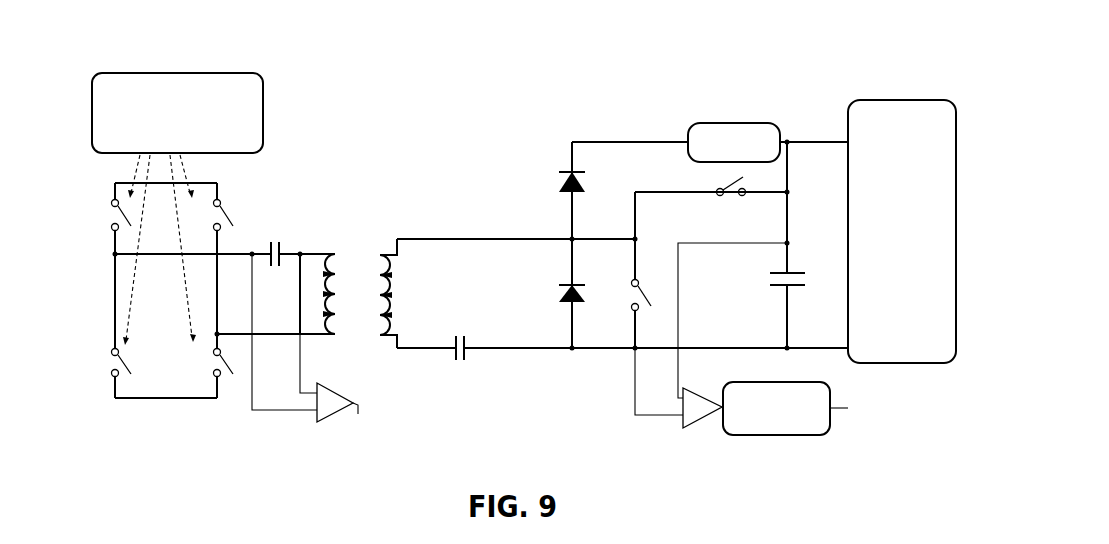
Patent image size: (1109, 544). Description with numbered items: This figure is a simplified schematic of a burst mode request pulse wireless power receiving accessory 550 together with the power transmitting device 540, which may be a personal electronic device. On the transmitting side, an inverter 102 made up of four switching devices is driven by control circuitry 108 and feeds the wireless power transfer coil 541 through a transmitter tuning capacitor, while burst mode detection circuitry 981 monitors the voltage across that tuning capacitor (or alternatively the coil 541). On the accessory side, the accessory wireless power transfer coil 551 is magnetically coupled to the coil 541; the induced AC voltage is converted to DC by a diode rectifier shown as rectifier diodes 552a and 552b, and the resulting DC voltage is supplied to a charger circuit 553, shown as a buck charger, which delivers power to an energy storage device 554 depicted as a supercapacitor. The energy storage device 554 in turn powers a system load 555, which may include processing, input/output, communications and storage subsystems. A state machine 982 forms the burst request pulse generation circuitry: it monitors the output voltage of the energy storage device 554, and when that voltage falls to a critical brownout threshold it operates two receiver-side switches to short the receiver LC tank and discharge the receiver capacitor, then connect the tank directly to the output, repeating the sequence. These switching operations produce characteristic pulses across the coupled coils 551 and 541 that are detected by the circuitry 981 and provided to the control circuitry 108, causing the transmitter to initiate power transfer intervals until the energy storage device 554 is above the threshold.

The control circuitry 108 is at (243, 70).
The inverter 102 is at (168, 408).
The power transmitting device 540 is at (298, 225).
The wireless power transfer coil 541 is at (335, 250).
The accessory 550 is at (680, 266).
The accessory wireless power transfer coil 551 is at (384, 252).
The rectifier diode 552a is at (554, 196).
The rectifier diode 552b is at (557, 284).
The charger circuit 553 is at (753, 122).
The energy storage device 554 is at (776, 293).
The system load 555 is at (892, 99).
The burst mode detection circuitry 981 is at (325, 422).
The state machine 982 is at (763, 435).